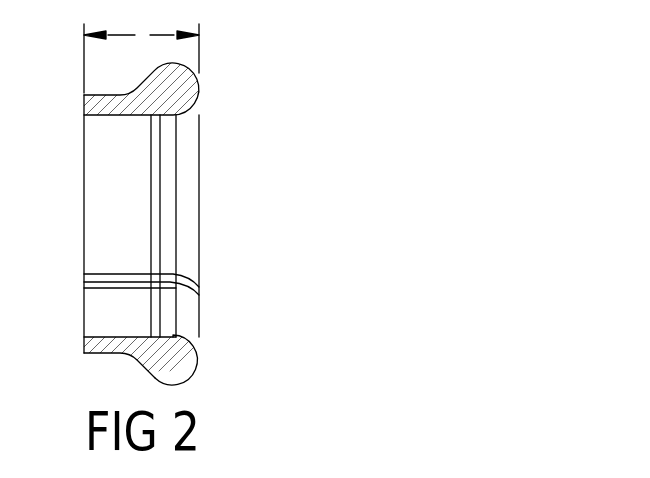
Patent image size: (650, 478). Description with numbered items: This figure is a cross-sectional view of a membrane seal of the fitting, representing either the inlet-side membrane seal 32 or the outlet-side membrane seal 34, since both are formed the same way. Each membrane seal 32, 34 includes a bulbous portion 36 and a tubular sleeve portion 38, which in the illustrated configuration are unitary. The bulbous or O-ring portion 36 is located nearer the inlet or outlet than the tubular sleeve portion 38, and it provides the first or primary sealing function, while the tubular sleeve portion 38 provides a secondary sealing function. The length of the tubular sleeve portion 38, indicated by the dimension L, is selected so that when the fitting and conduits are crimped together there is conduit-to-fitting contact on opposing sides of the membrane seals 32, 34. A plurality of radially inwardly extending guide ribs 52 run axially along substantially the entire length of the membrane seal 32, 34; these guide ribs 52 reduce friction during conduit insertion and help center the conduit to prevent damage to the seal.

The inlet-side membrane seal 32 is at (196, 196).
The outlet-side membrane seal 34 is at (230, 107).
The bulbous portion 36 is at (175, 359).
The tubular sleeve portion 38 is at (121, 345).
The guide ribs 52 is at (127, 278).